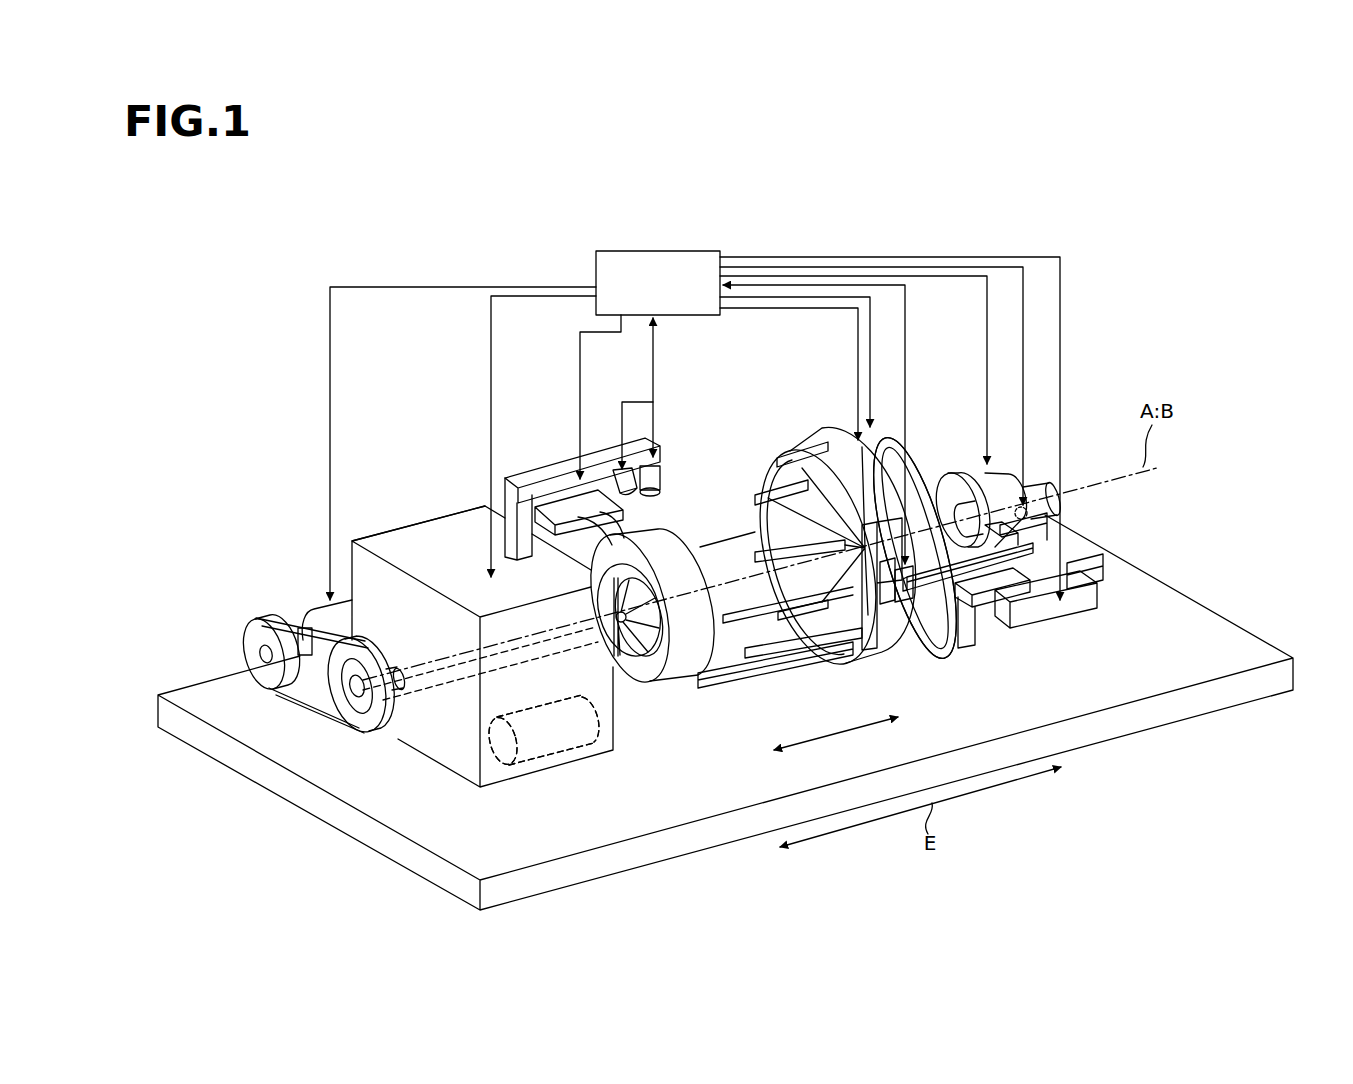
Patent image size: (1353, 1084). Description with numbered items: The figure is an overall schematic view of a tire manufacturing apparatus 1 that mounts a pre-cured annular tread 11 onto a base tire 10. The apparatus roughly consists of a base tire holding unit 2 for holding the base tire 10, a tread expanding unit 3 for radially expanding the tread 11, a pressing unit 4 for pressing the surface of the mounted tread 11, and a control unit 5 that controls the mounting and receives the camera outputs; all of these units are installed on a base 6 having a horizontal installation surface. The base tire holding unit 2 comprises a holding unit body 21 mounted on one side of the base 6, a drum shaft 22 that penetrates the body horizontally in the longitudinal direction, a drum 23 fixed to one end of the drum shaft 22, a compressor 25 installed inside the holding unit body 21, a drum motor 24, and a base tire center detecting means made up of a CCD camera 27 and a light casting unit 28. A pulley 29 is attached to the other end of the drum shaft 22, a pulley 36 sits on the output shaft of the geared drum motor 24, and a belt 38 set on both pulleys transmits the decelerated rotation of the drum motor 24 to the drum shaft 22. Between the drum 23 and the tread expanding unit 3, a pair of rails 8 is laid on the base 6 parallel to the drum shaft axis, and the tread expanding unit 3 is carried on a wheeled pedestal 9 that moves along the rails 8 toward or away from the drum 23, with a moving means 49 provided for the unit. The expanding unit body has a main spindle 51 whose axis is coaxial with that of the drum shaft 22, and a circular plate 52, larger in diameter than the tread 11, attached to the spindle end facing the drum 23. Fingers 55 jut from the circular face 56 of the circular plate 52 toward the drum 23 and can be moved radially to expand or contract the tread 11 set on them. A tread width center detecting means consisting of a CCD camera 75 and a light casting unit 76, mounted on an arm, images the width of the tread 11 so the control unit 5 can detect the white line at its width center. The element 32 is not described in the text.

The tire manufacturing apparatus 1 is at (562, 127).
The base tire holding unit 2 is at (452, 505).
The tread expanding unit 3 is at (990, 486).
The pressing unit 4 is at (570, 502).
The control unit 5 is at (706, 248).
The base 6 is at (1232, 640).
The rails 8 is at (738, 690).
The pedestal 9 is at (1043, 566).
The base tire 10 is at (670, 536).
The tread 11 is at (810, 452).
The holding unit body 21 is at (402, 527).
The drum shaft 22 is at (528, 659).
The drum 23 is at (660, 665).
The drum motor 24 is at (316, 607).
The compressor 25 is at (565, 756).
The encoder 32 is at (541, 731).
The CCD camera 27 is at (660, 480).
The light casting unit 28 is at (629, 452).
The pulley 29 is at (372, 720).
The pulley 36 is at (256, 663).
The belt 38 is at (307, 704).
The moving means 49 is at (1050, 626).
The main spindle 51 is at (1047, 490).
The circular plate 52 is at (941, 644).
The finger 55 is at (775, 502).
The circular face 56 is at (921, 646).
The CCD camera 75 is at (887, 618).
The light casting unit 76 is at (903, 633).